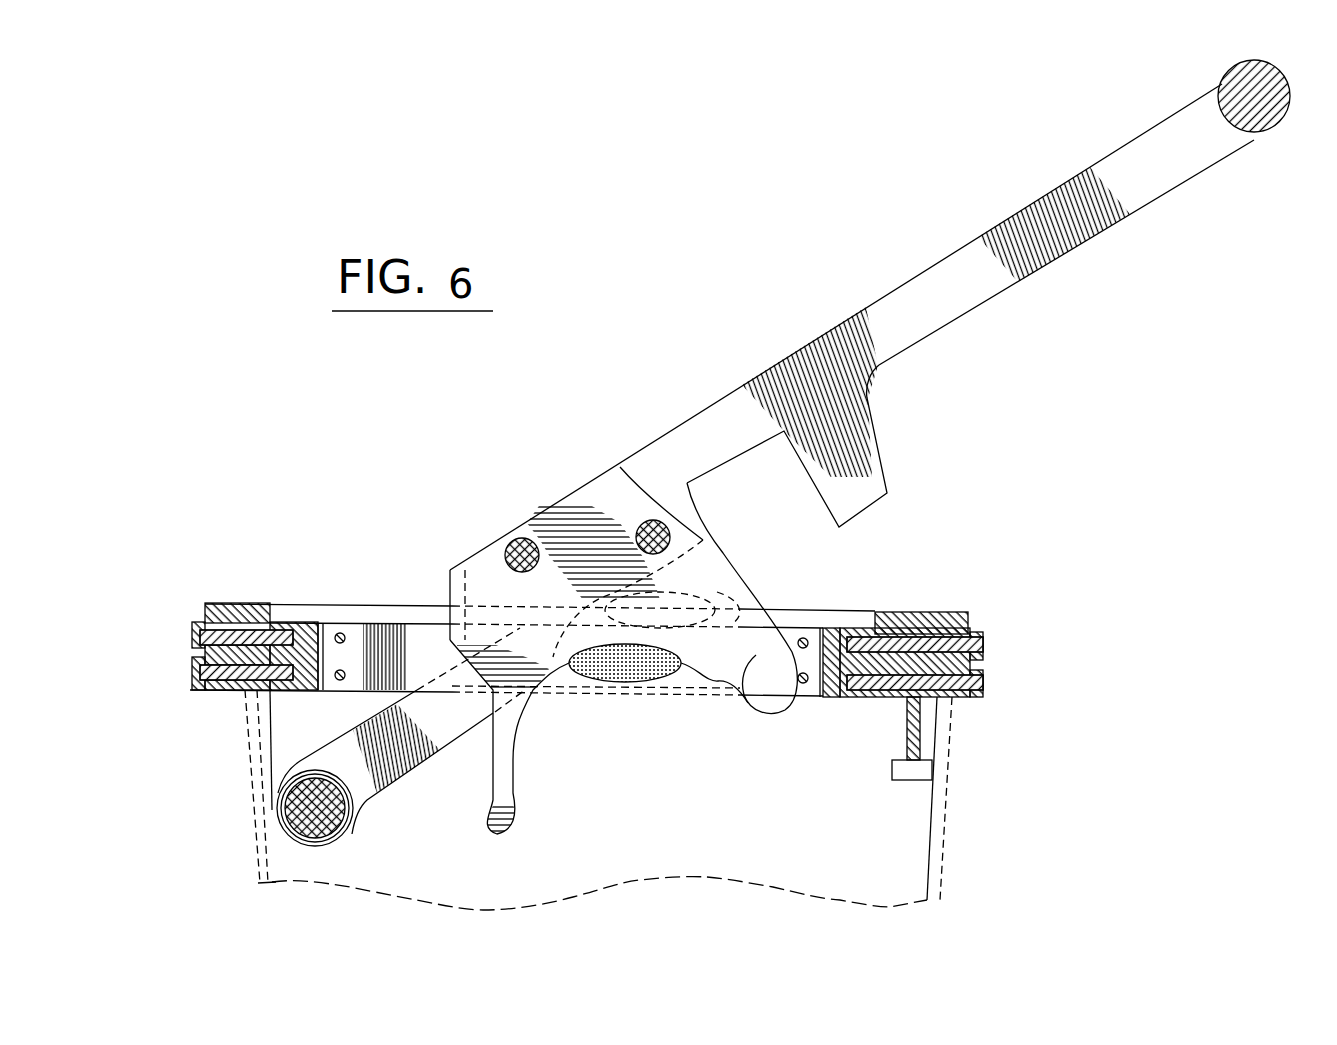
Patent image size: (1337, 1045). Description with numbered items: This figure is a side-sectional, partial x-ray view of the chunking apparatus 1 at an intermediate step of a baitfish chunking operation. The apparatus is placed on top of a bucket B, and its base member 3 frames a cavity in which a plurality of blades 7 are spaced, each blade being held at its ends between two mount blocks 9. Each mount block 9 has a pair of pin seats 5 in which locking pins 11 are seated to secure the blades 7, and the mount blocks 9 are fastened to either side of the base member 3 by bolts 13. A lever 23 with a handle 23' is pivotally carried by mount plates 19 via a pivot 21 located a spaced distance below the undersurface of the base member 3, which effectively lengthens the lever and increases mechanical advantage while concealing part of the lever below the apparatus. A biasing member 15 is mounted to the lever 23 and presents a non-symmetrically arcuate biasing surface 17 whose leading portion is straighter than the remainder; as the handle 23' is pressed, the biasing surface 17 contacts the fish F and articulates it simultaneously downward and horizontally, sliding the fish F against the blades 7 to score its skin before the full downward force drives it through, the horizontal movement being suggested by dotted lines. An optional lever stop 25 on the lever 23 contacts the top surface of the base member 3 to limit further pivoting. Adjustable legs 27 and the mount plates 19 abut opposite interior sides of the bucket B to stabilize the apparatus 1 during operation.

The chunking apparatus 1 is at (614, 283).
The base member 3 is at (436, 625).
The pin seats 5 is at (292, 690).
The blades 7 is at (437, 668).
The mount blocks 9 is at (310, 603).
The locking pins 11 is at (343, 672).
The bolts 13 is at (983, 687).
The biasing member 15 is at (718, 581).
The biasing surface 17 is at (728, 677).
The mount plates 19 is at (340, 732).
The pivot 21 is at (312, 813).
The lever 23 is at (852, 327).
The handle 23' is at (1260, 140).
The lever stop 25 is at (867, 505).
The legs 27 is at (942, 743).
The fish F is at (644, 682).
The bucket B is at (627, 801).